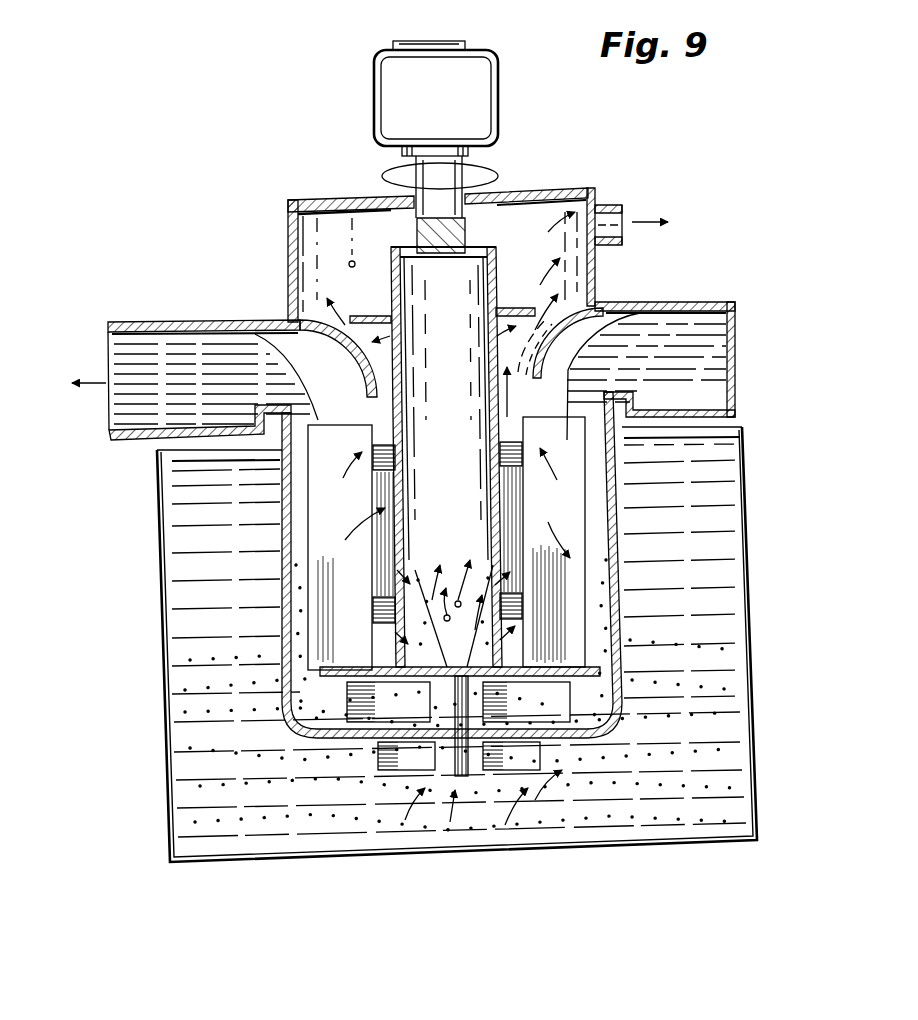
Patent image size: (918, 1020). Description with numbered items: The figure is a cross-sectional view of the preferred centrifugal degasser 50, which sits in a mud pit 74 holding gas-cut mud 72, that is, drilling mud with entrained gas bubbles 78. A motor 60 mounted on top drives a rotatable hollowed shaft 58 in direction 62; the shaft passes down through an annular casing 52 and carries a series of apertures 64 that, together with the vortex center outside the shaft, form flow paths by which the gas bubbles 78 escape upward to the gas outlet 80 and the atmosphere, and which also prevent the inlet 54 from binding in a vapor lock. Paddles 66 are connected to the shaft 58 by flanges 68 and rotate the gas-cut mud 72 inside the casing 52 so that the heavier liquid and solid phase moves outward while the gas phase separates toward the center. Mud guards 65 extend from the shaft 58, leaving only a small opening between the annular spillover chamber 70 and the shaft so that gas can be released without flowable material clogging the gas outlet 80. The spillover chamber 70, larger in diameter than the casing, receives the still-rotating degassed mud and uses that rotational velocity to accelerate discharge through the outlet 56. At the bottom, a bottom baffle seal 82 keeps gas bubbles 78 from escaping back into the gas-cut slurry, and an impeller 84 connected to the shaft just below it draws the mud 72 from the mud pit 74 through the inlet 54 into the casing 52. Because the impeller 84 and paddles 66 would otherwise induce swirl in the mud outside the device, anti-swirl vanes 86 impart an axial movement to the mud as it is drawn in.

The centrifugal degasser 50 is at (521, 140).
The annular casing 52 is at (598, 283).
The inlet 54 is at (459, 778).
The outlet 56 is at (110, 425).
The rotatable hollowed shaft 58 is at (498, 300).
The motor 60 is at (497, 82).
The direction 62 is at (386, 172).
The apertures 64 is at (358, 264).
The mud guards 65 is at (360, 316).
The paddles 66 is at (336, 514).
The flanges 68 is at (520, 440).
The annular spillover chamber 70 is at (198, 362).
The gas-cut mud 72 is at (210, 584).
The mud pit 74 is at (158, 567).
The gas bubbles 78 is at (351, 262).
The gas outlet 80 is at (625, 212).
The bottom baffle seal 82 is at (580, 672).
The impeller 84 is at (322, 724).
The anti-swirl vanes 86 is at (378, 762).